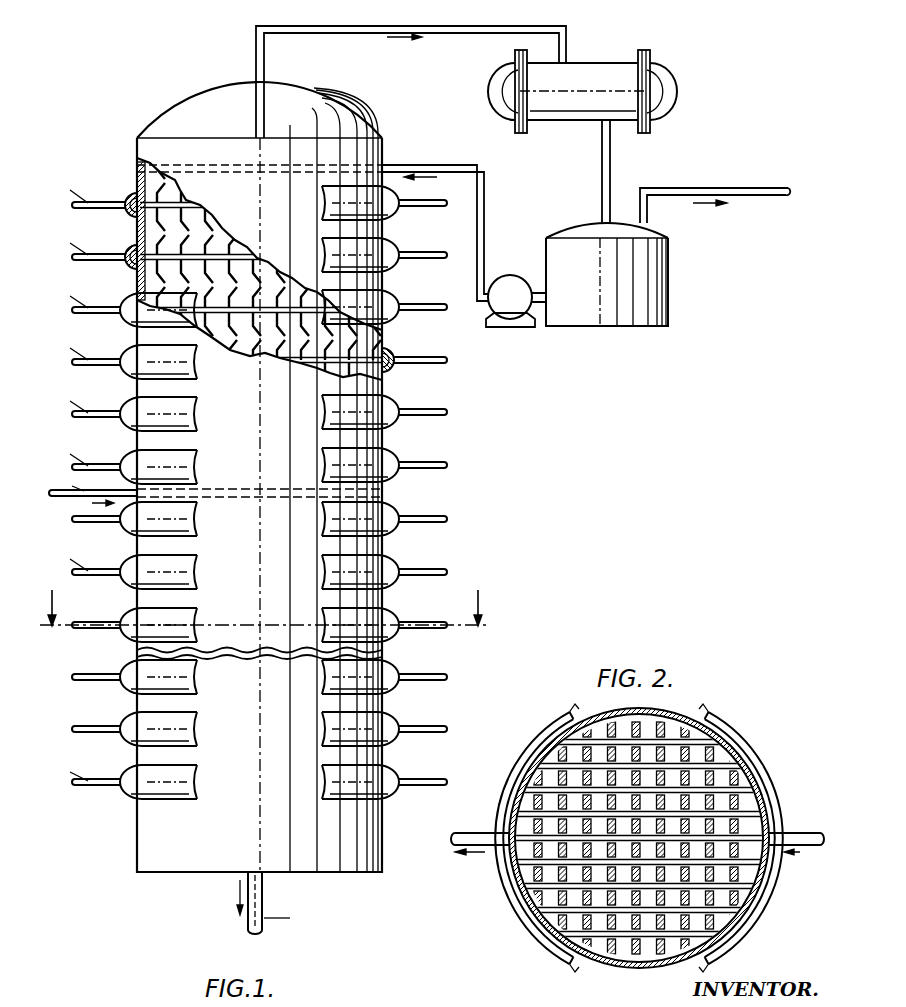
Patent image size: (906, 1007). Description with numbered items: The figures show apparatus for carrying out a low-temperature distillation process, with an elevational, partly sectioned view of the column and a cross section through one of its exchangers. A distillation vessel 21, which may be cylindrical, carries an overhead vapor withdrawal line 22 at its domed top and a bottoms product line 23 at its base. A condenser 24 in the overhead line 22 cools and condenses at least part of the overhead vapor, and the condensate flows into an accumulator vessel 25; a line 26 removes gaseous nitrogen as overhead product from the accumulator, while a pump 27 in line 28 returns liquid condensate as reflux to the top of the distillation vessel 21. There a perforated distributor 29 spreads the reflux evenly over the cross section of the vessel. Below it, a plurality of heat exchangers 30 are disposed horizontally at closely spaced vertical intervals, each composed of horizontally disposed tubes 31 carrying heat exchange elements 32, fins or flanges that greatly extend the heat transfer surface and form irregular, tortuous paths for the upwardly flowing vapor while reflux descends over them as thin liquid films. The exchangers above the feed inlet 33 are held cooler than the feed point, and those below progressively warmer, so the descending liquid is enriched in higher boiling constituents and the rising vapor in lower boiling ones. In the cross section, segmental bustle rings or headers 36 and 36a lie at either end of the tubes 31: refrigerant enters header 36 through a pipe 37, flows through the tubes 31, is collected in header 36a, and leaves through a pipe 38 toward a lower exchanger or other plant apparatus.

In FIG. 1, the distillation vessel 21 is at (137, 849).
In FIG. 1, the overhead vapor withdrawal line 22 is at (256, 52).
In FIG. 1, the bottoms product line 23 is at (264, 896).
In FIG. 1, the condenser 24 is at (677, 92).
In FIG. 1, the accumulator vessel 25 is at (668, 296).
In FIG. 1, the line 26 is at (777, 197).
In FIG. 1, the pump 27 is at (506, 276).
In FIG. 1, the line 28 is at (484, 175).
In FIG. 1, the distributor 29 is at (195, 166).
In FIG. 1, the heat exchangers 30 is at (255, 250).
In FIG. 2, the tubes 31 is at (720, 766).
In FIG. 1, the heat exchange elements 32 is at (205, 236).
In FIG. 2, the heat exchange elements 32 is at (636, 732).
In FIG. 1, the feed inlet 33 is at (72, 497).
In FIG. 2, the header or segmental bustle ring 36 is at (765, 767).
In FIG. 2, the header or segmental bustle ring 36a is at (535, 740).
In FIG. 2, the pipe 37 is at (795, 836).
In FIG. 2, the pipe 38 is at (482, 830).